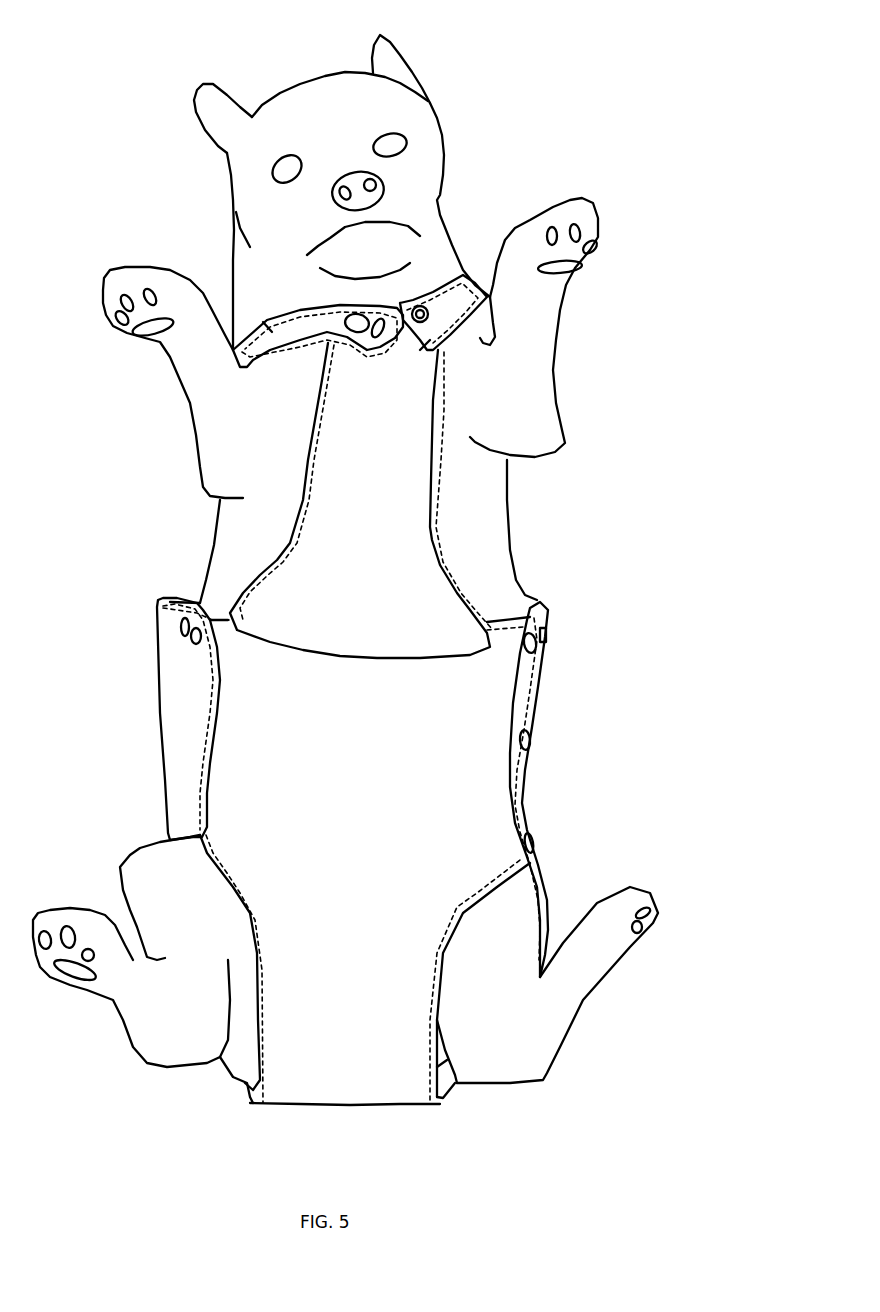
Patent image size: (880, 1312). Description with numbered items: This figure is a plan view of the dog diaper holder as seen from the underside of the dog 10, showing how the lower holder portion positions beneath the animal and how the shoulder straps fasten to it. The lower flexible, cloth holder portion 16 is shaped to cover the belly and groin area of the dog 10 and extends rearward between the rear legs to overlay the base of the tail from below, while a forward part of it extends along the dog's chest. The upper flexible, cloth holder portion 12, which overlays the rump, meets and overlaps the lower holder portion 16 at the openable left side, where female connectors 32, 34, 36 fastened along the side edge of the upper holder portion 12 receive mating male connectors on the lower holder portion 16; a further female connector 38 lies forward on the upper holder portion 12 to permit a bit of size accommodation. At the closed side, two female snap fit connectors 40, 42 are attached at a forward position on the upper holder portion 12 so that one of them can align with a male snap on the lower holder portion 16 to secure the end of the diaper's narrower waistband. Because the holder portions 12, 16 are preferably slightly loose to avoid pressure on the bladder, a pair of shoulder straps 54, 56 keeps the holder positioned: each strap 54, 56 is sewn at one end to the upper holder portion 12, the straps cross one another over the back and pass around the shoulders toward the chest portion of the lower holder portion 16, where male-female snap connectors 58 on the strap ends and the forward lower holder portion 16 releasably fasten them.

The dog 10 is at (462, 46).
The upper flexible cloth holder portion 12 is at (323, 723).
The lower flexible cloth holder portion 16 is at (390, 1005).
The female connector 32 is at (569, 656).
The female connector 34 is at (567, 751).
The female connector 36 is at (569, 848).
The female connector 38 is at (576, 608).
The female snap fit connector 40 is at (128, 656).
The female snap fit connector 42 is at (135, 614).
The shoulder strap 54 is at (457, 262).
The shoulder strap 56 is at (279, 294).
The male-female snap connectors 58 is at (413, 306).